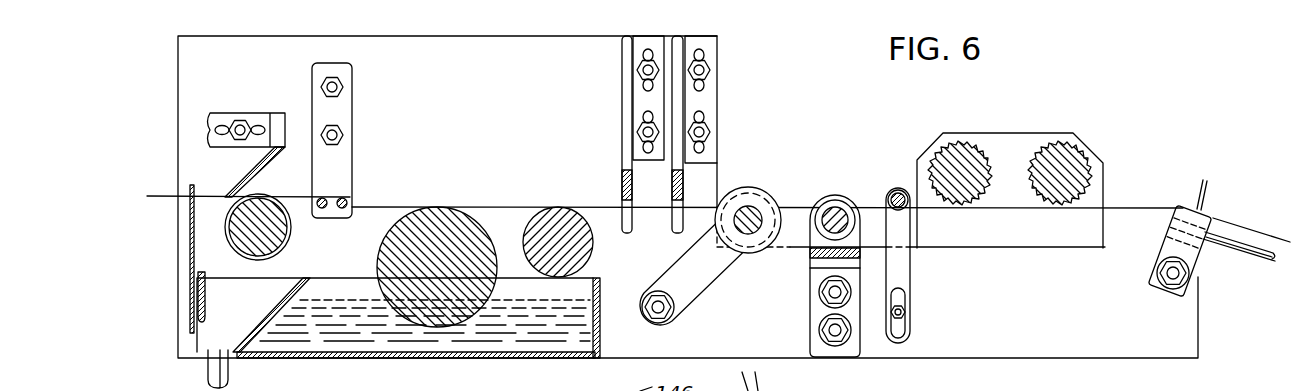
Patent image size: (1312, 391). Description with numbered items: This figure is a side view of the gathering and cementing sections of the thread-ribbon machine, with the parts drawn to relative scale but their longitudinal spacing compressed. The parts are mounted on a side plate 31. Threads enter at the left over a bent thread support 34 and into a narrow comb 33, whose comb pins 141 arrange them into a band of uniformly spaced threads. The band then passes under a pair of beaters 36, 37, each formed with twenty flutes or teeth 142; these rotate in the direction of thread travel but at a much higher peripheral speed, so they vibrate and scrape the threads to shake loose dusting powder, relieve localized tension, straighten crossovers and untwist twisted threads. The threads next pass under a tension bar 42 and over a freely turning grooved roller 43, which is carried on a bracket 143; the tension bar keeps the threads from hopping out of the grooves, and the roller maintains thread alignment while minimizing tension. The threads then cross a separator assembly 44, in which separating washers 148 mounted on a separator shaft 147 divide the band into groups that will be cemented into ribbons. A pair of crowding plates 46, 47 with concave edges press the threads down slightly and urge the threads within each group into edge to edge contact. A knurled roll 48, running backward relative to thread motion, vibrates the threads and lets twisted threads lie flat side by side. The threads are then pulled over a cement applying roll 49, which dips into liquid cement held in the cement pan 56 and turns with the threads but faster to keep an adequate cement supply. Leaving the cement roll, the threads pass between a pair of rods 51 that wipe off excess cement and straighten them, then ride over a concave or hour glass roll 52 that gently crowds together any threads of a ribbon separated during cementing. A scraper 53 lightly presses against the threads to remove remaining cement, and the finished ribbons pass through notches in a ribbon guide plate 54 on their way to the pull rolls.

The side plate 31 is at (1185, 336).
The narrow comb 33 is at (1185, 200).
The bent thread support 34 is at (1245, 252).
The beater 36 is at (1045, 145).
The beater 37 is at (960, 140).
The tension bar 42 is at (897, 189).
The grooved roller 43 is at (848, 190).
The separator assembly 44 is at (731, 235).
The crowding plate 46 is at (672, 186).
The crowding plate 47 is at (622, 186).
The knurled roll 48 is at (583, 250).
The cement applying roll 49 is at (393, 247).
The rods 51 is at (330, 200).
The concave roll 52 is at (274, 247).
The scraper 53 is at (258, 172).
The ribbon guide plate 54 is at (191, 248).
The cement pan 56 is at (447, 357).
The comb pins 141 is at (1208, 190).
The flutes or teeth 142 is at (940, 163).
The bracket 143 is at (821, 256).
The separator shaft 147 is at (750, 233).
The separating washers 148 is at (762, 198).